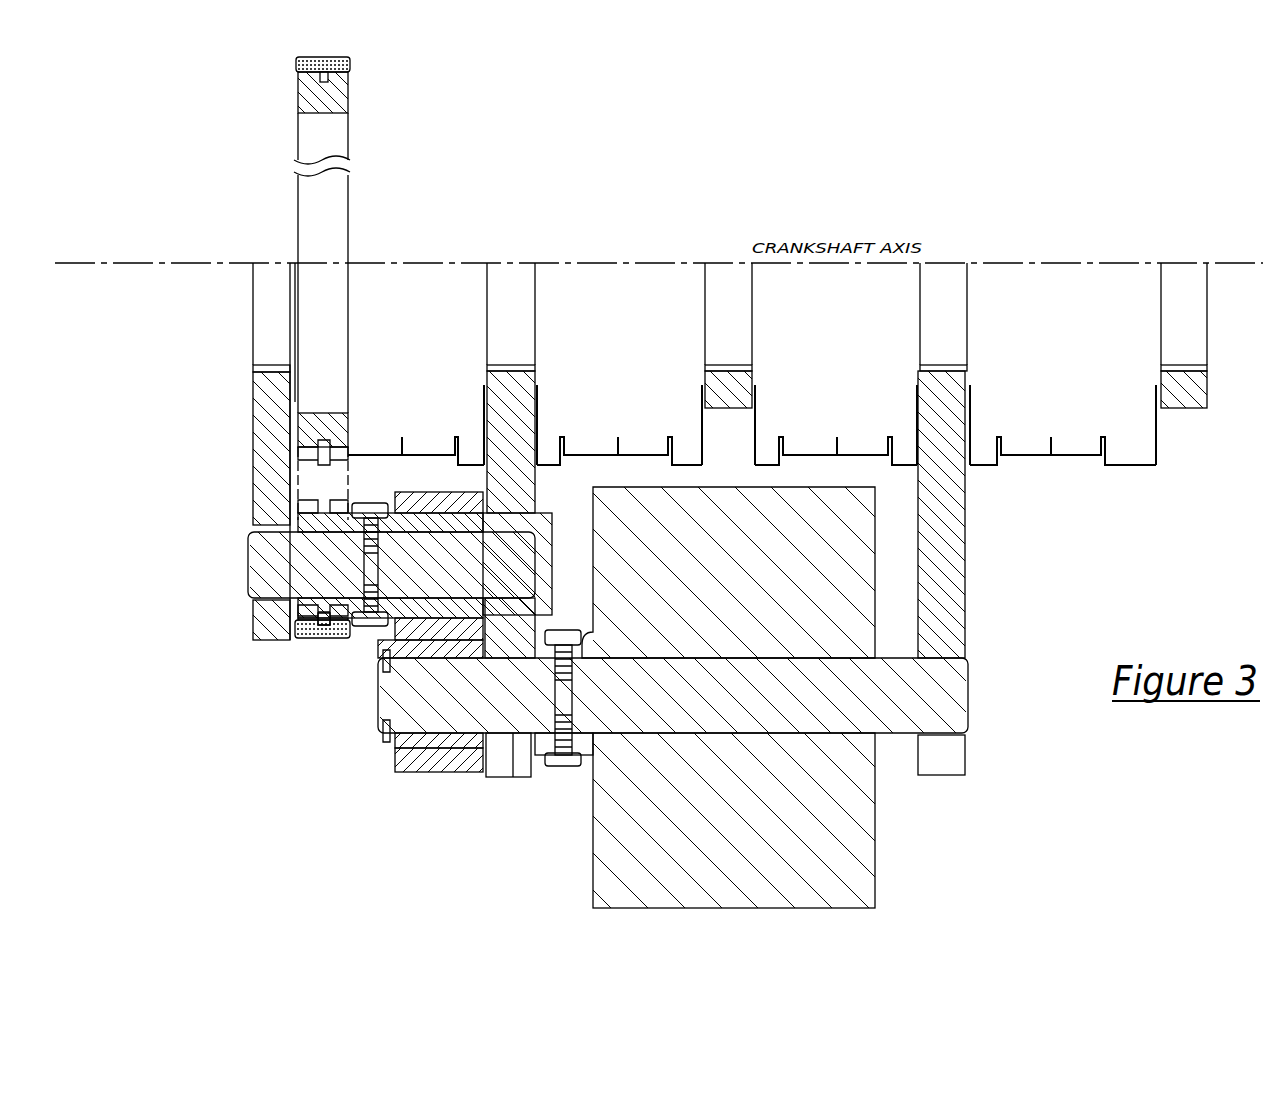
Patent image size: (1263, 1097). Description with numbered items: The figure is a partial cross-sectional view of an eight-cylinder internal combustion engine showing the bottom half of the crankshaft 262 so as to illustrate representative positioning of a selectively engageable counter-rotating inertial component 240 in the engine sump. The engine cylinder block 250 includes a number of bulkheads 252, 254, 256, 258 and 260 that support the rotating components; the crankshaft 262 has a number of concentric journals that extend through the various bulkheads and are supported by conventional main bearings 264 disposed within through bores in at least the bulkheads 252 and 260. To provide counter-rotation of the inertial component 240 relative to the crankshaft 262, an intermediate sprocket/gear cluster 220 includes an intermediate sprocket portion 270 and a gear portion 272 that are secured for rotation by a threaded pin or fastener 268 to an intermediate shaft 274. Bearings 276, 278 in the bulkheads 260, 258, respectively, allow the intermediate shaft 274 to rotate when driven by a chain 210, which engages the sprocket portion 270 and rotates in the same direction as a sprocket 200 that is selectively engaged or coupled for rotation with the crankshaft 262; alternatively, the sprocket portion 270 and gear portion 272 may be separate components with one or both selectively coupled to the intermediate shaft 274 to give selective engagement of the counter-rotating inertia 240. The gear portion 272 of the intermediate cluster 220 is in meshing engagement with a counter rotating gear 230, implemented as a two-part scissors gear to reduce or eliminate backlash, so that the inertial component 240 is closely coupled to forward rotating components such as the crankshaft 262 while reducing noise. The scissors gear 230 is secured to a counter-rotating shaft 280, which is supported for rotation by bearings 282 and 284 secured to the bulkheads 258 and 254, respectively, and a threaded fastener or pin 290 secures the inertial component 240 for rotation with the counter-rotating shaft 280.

The sprocket 200 is at (360, 88).
The chain 210 is at (360, 62).
The intermediate sprocket/gear cluster 220 is at (316, 654).
The counter rotating gear 230 is at (410, 778).
The inertial component 240 is at (850, 853).
The engine cylinder block 250 is at (996, 570).
The bulkhead 252 is at (1183, 285).
The bulkhead 254 is at (943, 285).
The bulkhead 256 is at (728, 285).
The bulkhead 258 is at (510, 285).
The bulkhead 260 is at (270, 436).
The crankshaft 262 is at (425, 351).
The bearings 264 is at (252, 368).
The threaded pin or fastener 268 is at (371, 503).
The intermediate sprocket portion 270 is at (282, 568).
The gear portion 272 is at (410, 608).
The intermediate shaft 274 is at (296, 604).
The bearing 276 is at (256, 612).
The bearing 278 is at (514, 525).
The counter-rotating shaft 280 is at (393, 700).
The bearing 282 is at (512, 740).
The bearing 284 is at (955, 738).
The threaded fastener or pin 290 is at (563, 768).